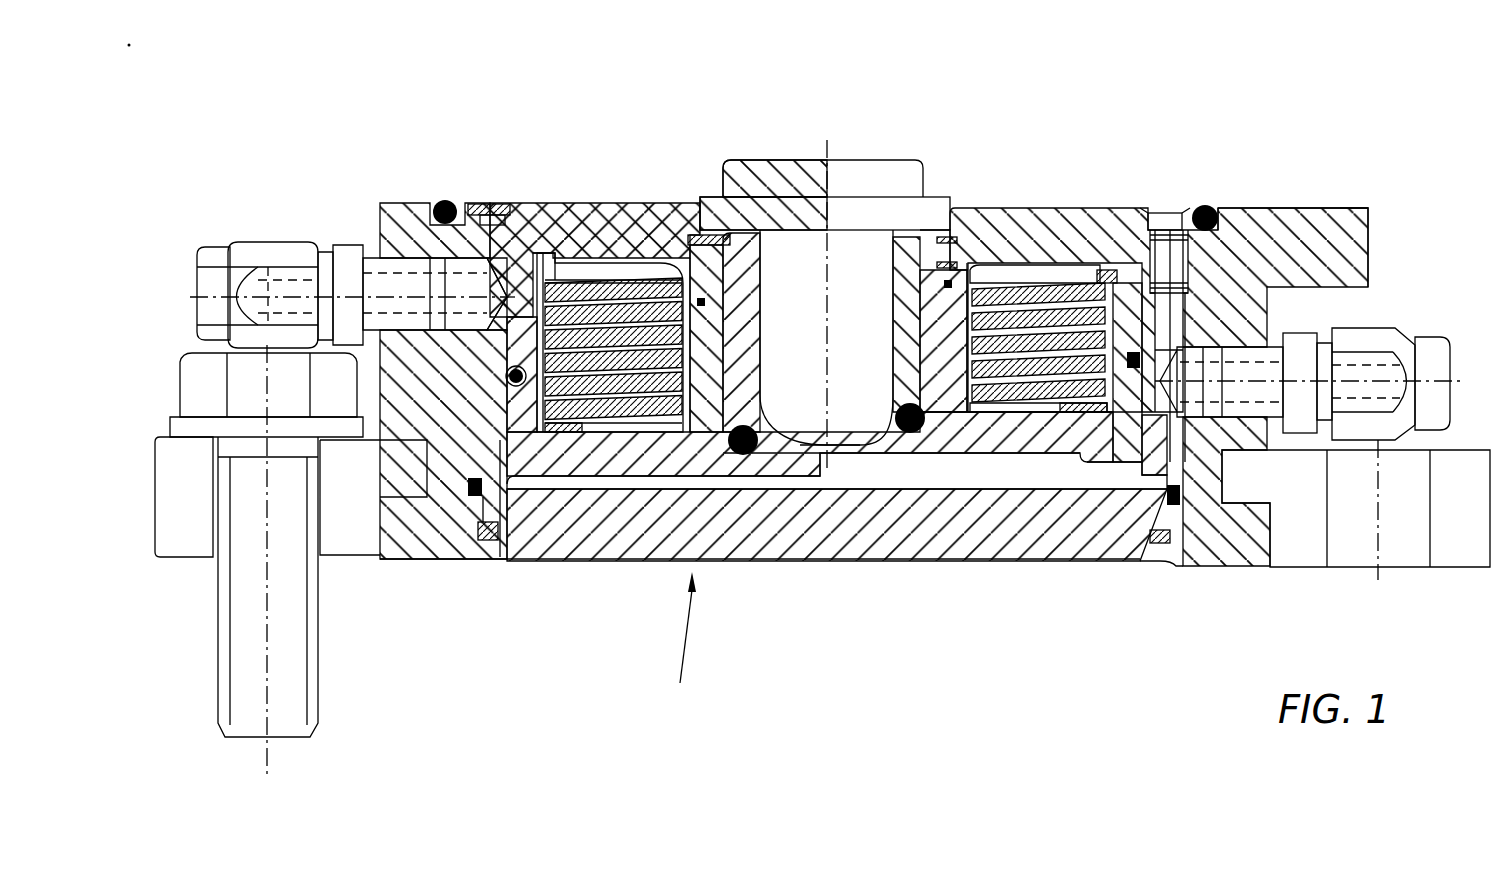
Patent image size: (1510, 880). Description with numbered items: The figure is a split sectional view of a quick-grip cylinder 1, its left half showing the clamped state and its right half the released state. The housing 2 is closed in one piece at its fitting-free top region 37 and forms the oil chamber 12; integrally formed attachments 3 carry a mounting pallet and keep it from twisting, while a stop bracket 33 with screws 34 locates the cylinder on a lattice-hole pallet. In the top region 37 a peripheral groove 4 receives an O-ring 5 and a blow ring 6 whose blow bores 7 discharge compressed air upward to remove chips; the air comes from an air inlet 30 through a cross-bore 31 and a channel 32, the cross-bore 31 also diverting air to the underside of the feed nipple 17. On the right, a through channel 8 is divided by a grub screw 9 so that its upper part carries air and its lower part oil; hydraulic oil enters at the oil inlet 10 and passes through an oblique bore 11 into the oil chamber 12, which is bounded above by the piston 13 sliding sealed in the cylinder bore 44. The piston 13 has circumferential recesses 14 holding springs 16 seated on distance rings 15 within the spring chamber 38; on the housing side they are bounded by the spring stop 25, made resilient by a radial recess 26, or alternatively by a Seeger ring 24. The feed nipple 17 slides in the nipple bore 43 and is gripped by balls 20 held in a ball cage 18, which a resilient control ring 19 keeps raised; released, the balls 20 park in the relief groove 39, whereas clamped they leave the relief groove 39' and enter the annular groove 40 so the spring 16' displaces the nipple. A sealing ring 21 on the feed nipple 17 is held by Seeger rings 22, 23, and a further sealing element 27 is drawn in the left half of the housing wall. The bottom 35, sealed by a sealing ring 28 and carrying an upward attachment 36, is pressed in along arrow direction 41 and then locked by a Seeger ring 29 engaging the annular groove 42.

The quick-grip cylinder 1 is at (1083, 182).
The housing 2 is at (1055, 208).
The attachment 3 is at (1390, 185).
The peripheral groove 4 is at (512, 255).
The O-ring 5 is at (1180, 270).
The blow ring 6 is at (478, 200).
The blow bores 7 is at (447, 285).
The channel 8 is at (1175, 318).
The grub screw 9 is at (1360, 180).
The oil inlet 10 is at (1350, 367).
The oblique bore 11 is at (1150, 543).
The oil chamber 12 is at (961, 474).
The piston 13 is at (1047, 452).
The recesses 14 is at (1010, 405).
The distance rings 15 is at (1083, 408).
The spring 16 is at (1053, 222).
The spring 16' is at (908, 158).
The feed nipple 17 is at (745, 180).
The ball cage 18 is at (716, 455).
The control ring 19 is at (740, 458).
The balls 20 is at (773, 455).
The sealing ring 21 is at (860, 172).
The Seeger ring 22 is at (770, 168).
The Seeger ring 23 is at (827, 160).
The Seeger ring 24 is at (1143, 210).
The spring stop 25 is at (625, 262).
The radial recess 26 is at (575, 263).
The seal 27 is at (508, 388).
The sealing ring 28 is at (476, 450).
The Seeger ring 29 is at (488, 545).
The air inlet 30 is at (278, 267).
The cross-bore 31 is at (448, 200).
The channel 32 is at (440, 280).
The stop bracket 33 is at (358, 537).
The screws 34 is at (288, 638).
The bottom 35 is at (886, 535).
The attachment 36 is at (522, 497).
The top region 37 is at (975, 210).
The spring chamber 38 is at (695, 166).
The relief groove 39 is at (920, 563).
The relief groove 39' is at (645, 510).
The annular groove 40 is at (850, 350).
The arrow direction 41 is at (683, 648).
The annular groove 42 is at (490, 500).
The nipple bore 43 is at (948, 208).
The cylinder bore 44 is at (543, 262).